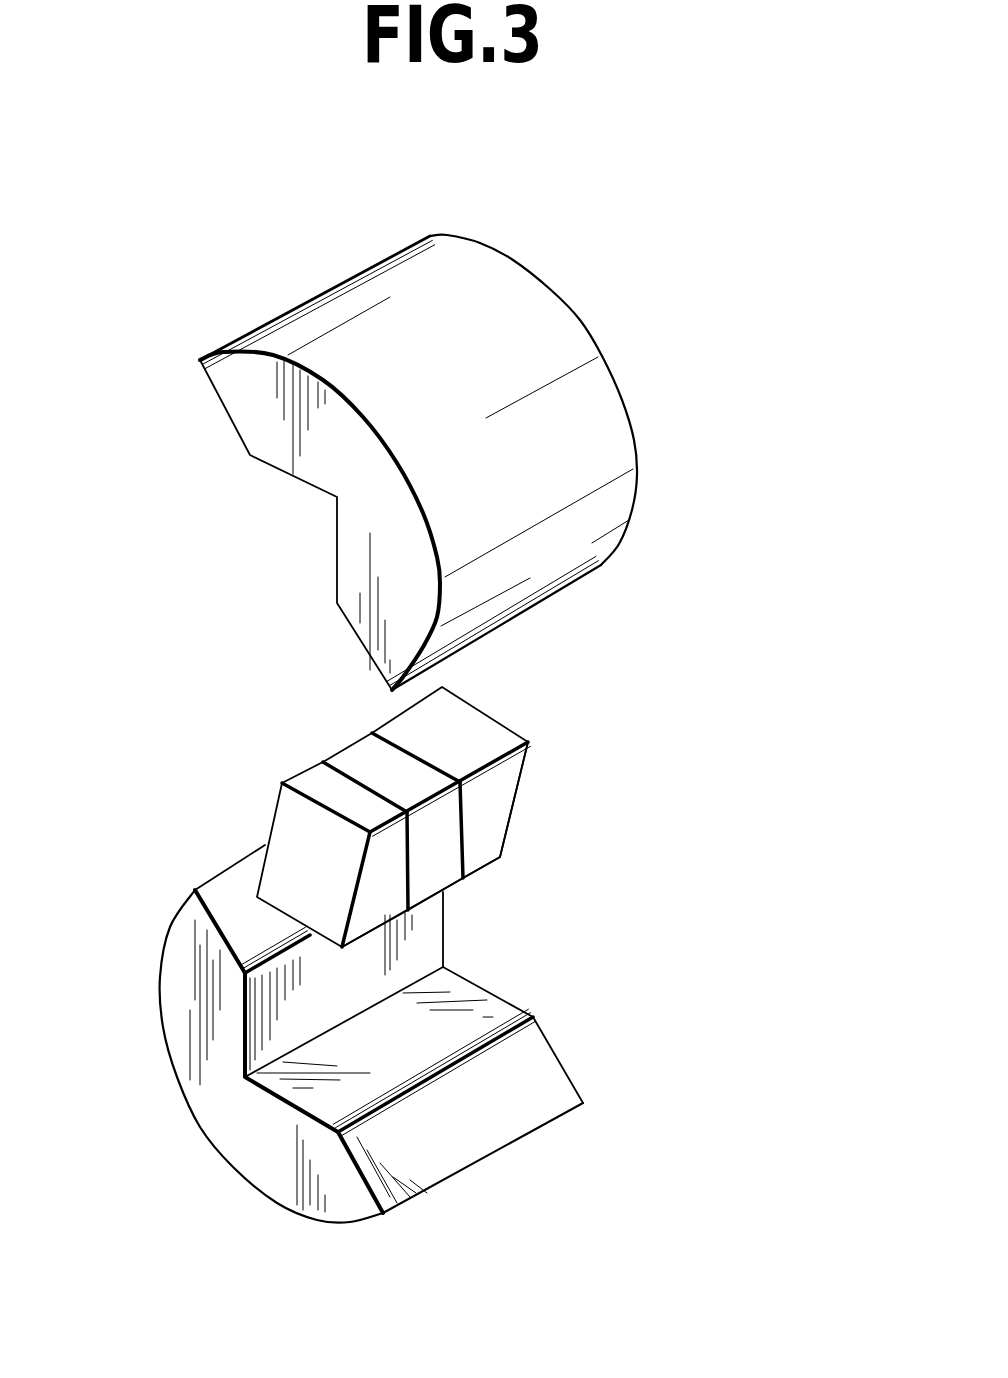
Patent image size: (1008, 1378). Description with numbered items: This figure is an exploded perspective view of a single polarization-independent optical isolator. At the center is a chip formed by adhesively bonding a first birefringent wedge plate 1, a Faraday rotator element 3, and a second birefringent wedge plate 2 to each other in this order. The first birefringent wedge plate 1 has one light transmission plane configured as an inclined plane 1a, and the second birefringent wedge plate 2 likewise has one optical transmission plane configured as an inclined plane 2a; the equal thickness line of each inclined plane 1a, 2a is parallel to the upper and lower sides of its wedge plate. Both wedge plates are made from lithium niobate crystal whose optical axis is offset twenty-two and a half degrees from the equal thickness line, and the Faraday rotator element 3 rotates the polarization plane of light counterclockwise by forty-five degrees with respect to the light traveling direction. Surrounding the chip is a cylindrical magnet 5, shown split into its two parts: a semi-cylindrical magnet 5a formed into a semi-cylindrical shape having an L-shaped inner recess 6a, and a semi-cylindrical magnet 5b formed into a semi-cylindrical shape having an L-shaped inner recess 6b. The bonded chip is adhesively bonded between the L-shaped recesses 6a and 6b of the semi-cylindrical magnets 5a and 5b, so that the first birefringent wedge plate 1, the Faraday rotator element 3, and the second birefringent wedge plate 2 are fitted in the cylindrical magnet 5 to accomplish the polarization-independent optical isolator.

The first birefringent wedge plate 1 is at (313, 775).
The inclined plane 1a is at (310, 837).
The second birefringent wedge plate 2 is at (412, 720).
The inclined plane 2a is at (530, 763).
The Faraday rotator element 3 is at (363, 748).
The cylindrical magnet 5 is at (790, 725).
The semi-cylindrical magnet 5a is at (533, 1072).
The semi-cylindrical magnet 5b is at (561, 561).
The L-shaped inner recess 6a is at (358, 1048).
The L-shaped inner recess 6b is at (307, 513).